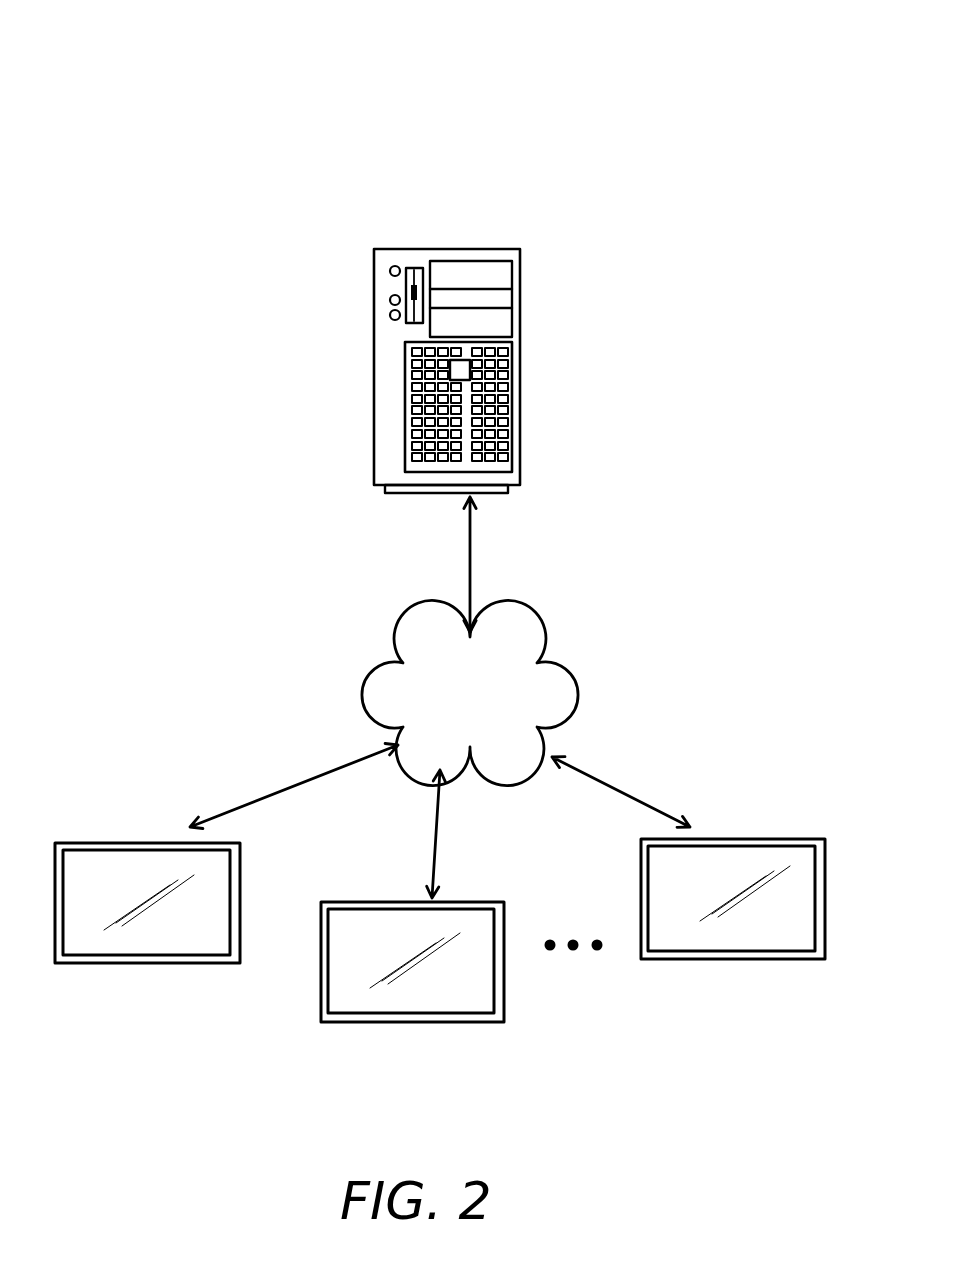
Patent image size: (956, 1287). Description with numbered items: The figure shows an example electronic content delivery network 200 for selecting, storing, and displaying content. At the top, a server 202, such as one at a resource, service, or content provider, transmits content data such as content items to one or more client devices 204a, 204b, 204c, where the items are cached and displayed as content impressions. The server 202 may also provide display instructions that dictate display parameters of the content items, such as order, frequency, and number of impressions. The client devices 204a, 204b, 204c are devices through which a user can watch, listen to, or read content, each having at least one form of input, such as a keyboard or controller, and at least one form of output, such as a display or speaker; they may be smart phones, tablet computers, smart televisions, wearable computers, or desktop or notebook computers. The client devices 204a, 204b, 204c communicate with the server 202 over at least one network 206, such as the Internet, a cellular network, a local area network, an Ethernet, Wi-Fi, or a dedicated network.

The electronic content delivery network 200 is at (827, 112).
The server 202 is at (373, 330).
The client device 204a is at (100, 843).
The client device 204b is at (378, 902).
The client device 204c is at (807, 838).
The network 206 is at (553, 680).